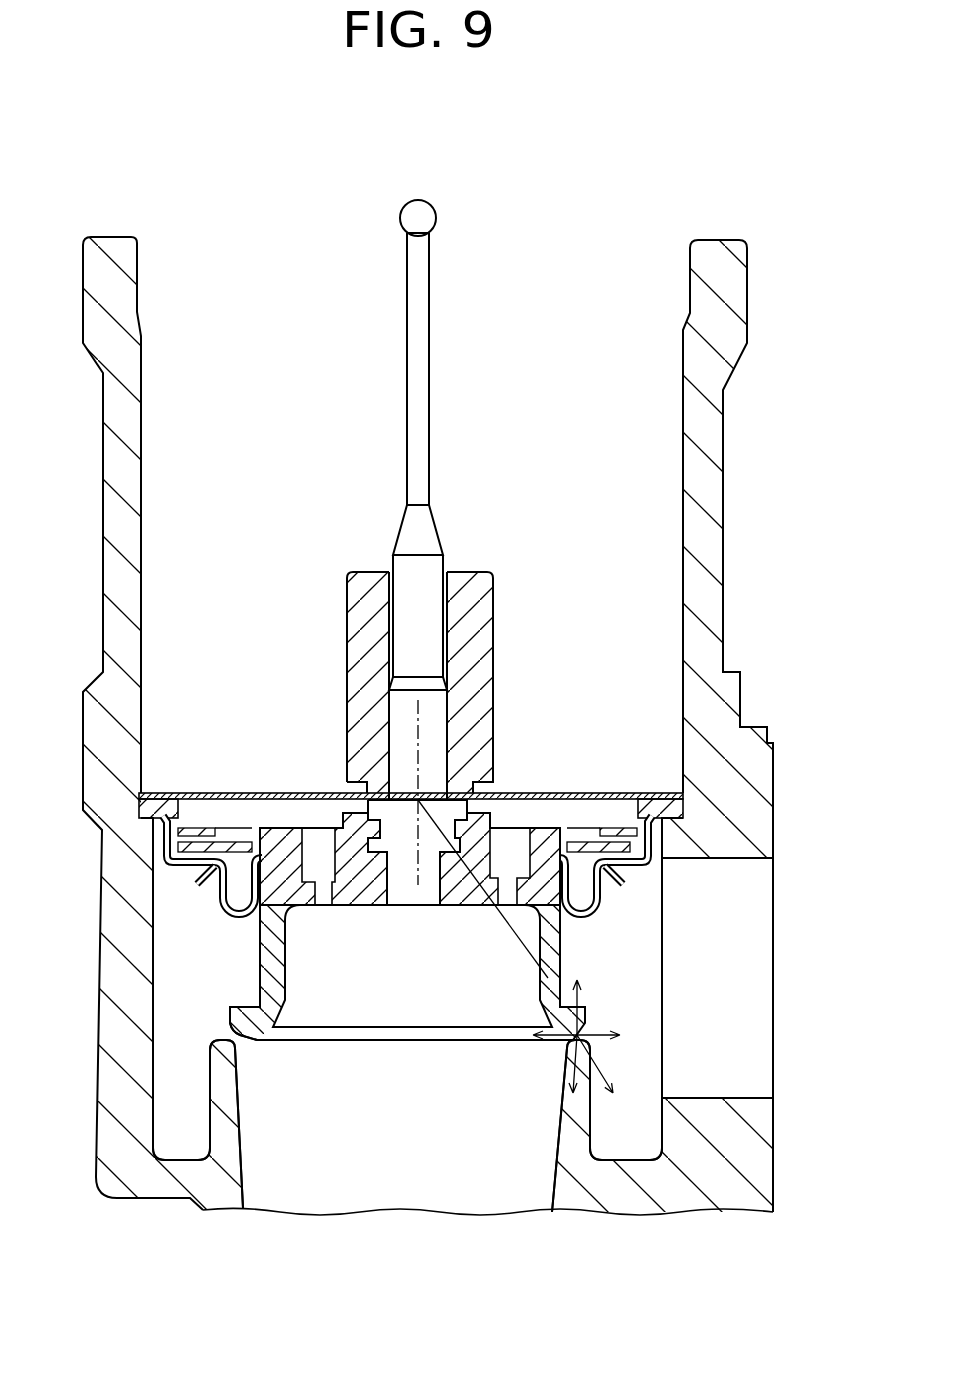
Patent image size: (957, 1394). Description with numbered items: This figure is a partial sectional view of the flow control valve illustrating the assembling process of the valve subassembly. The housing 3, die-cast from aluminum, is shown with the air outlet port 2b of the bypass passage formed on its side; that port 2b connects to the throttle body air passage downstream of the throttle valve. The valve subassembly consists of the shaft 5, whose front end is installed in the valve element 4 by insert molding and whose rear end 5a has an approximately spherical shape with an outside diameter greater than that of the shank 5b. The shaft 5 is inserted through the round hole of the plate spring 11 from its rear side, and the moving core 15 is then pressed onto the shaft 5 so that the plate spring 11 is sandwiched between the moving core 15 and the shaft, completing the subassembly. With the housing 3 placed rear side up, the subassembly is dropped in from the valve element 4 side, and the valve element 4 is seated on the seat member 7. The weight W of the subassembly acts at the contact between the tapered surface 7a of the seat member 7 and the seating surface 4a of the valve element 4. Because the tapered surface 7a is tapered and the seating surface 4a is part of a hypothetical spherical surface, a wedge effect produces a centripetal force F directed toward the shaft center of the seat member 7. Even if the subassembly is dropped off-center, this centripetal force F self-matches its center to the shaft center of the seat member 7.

The housing 3 is at (755, 763).
The air outlet port 2b is at (745, 1055).
The valve element 4 is at (246, 979).
The seating surface 4a is at (238, 1053).
The shaft 5 is at (464, 580).
The rear end 5a is at (423, 218).
The shank 5b is at (418, 357).
The seat member 7 is at (223, 1083).
The tapered surface 7a is at (201, 1037).
The plate spring 11 is at (593, 793).
The moving core 15 is at (483, 608).
The centripetal force F is at (550, 1040).
The weight W is at (567, 1072).